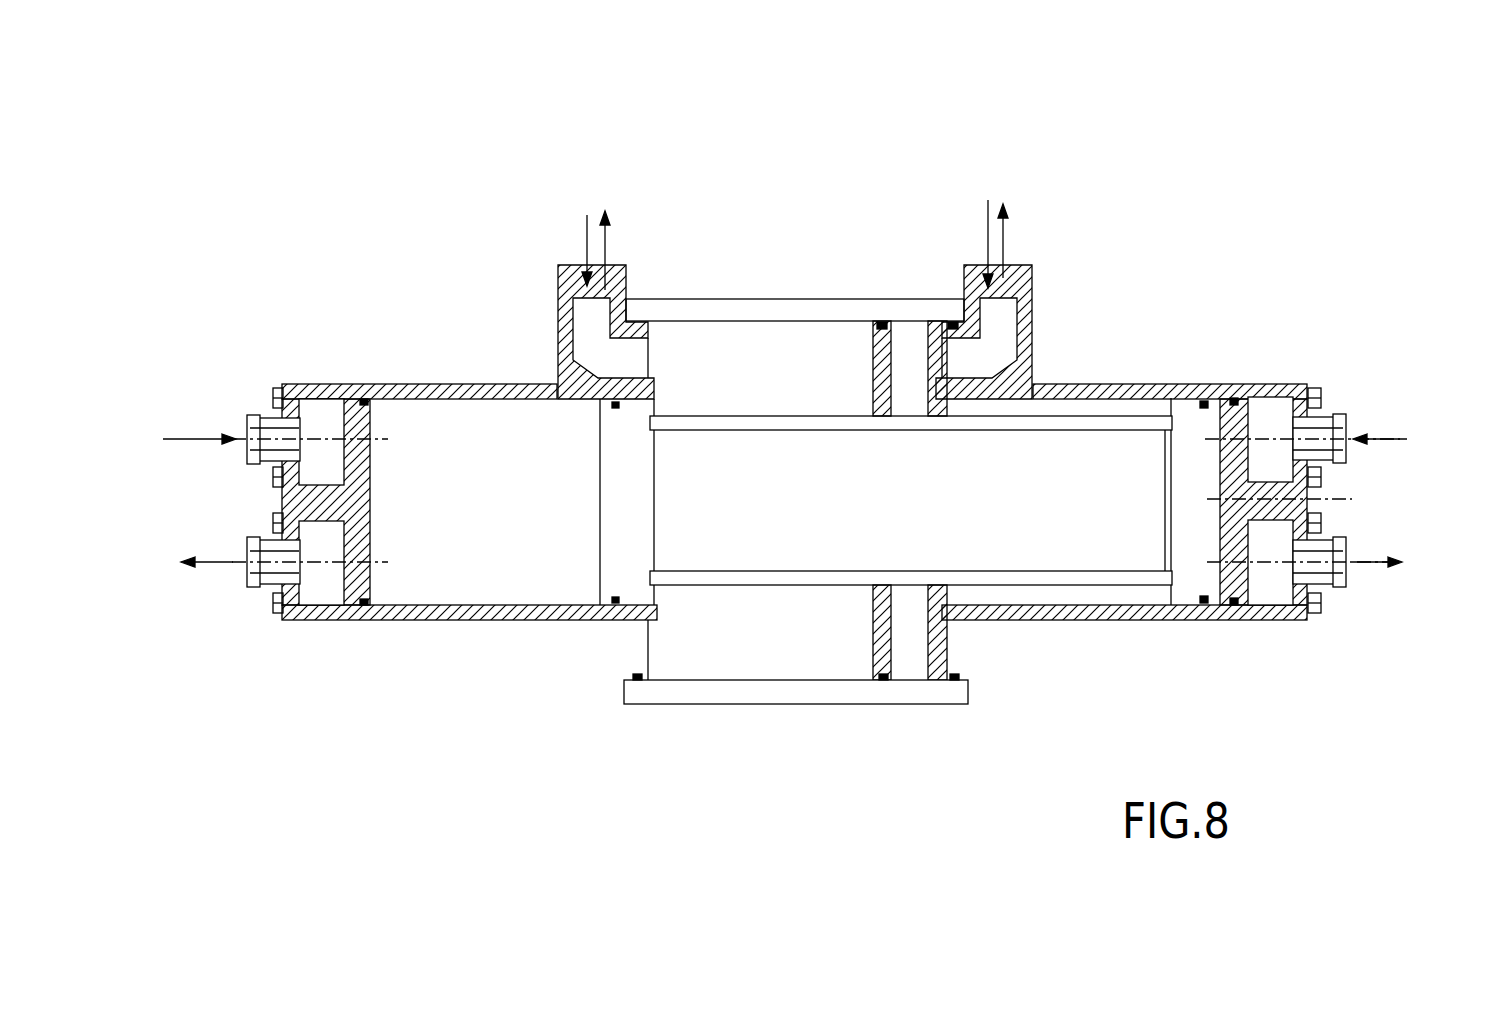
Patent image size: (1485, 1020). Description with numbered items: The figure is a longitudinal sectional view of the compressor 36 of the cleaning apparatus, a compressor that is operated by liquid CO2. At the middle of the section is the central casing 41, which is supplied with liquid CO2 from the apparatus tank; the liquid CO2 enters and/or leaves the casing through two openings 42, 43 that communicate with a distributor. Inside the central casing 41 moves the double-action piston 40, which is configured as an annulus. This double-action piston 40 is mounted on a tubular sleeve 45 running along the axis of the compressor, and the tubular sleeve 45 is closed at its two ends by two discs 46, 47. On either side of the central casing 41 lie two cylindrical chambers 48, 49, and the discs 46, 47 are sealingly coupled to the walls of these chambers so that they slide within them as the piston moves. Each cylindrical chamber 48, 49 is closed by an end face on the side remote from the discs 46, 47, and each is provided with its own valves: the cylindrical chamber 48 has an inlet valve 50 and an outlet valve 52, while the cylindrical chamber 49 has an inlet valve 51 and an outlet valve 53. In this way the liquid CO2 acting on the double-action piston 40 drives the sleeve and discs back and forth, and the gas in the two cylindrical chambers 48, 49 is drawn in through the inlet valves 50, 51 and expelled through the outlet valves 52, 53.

The compressor 36 is at (696, 127).
The double-action piston 40 is at (903, 335).
The central casing 41 is at (766, 300).
The opening 42 is at (1000, 324).
The opening 43 is at (566, 325).
The tubular sleeve 45 is at (917, 503).
The disc 46 is at (1193, 570).
The disc 47 is at (619, 552).
The cylindrical chamber 48 is at (1170, 388).
The cylindrical chamber 49 is at (430, 388).
The inlet valve 50 is at (1265, 405).
The inlet valve 51 is at (320, 405).
The outlet valve 52 is at (1280, 592).
The outlet valve 53 is at (322, 598).